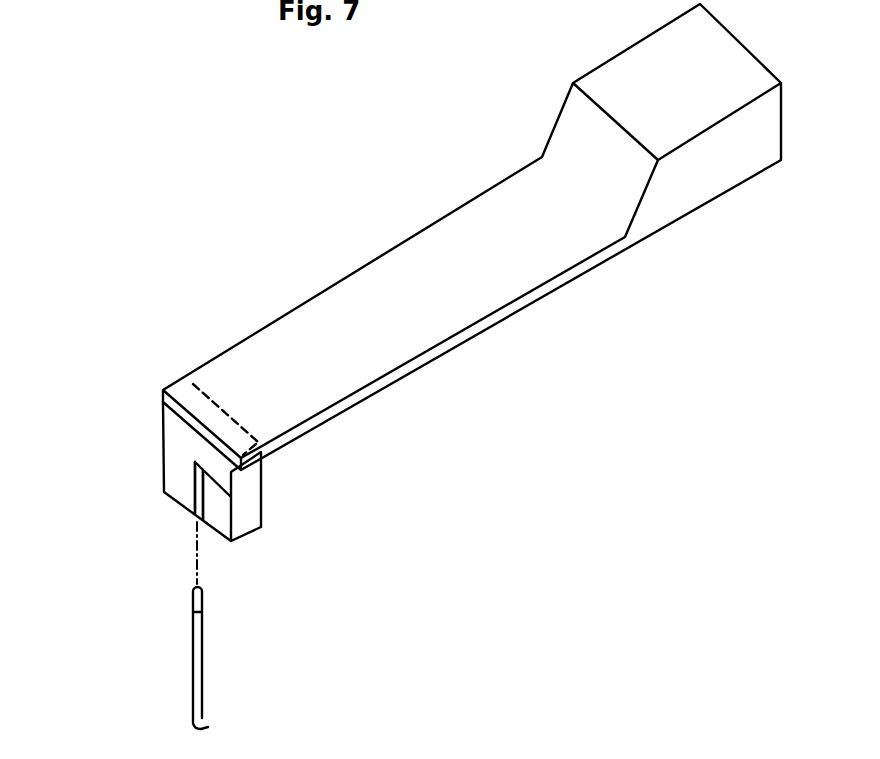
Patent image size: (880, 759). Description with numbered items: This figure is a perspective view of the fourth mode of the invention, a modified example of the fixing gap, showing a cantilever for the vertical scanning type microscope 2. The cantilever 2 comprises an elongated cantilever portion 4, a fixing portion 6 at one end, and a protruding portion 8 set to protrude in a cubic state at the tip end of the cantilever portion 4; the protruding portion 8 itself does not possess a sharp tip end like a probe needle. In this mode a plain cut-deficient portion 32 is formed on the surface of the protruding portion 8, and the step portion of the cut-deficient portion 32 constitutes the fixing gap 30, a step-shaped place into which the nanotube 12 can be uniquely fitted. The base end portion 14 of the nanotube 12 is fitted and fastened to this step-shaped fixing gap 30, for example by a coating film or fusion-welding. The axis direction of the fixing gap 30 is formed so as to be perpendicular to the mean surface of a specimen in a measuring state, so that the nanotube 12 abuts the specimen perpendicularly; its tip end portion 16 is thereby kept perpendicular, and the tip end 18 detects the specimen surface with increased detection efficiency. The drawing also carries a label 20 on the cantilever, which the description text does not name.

The cantilever for the vertical scanning type microscope 2 is at (318, 281).
The upper surface 20 is at (366, 191).
The cantilever portion 4 is at (487, 293).
The fixing portion 6 is at (705, 178).
The protruding portion 8 is at (183, 449).
The fixing gap 30 is at (196, 482).
The cut-deficient portion 32 is at (219, 509).
The nanotube 12 is at (180, 639).
The base end portion 14 is at (202, 611).
The tip end portion 16 is at (199, 695).
The tip end 18 is at (208, 727).